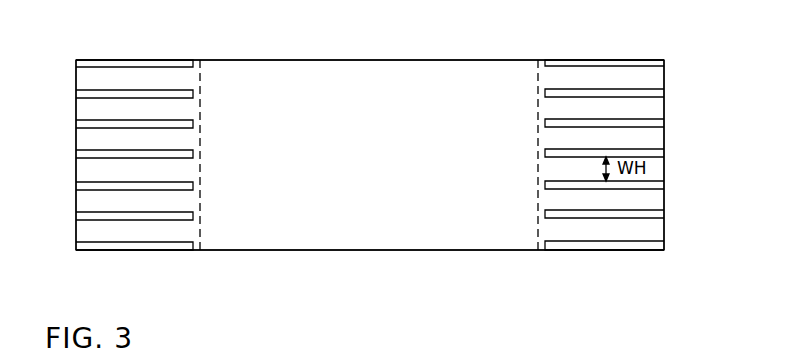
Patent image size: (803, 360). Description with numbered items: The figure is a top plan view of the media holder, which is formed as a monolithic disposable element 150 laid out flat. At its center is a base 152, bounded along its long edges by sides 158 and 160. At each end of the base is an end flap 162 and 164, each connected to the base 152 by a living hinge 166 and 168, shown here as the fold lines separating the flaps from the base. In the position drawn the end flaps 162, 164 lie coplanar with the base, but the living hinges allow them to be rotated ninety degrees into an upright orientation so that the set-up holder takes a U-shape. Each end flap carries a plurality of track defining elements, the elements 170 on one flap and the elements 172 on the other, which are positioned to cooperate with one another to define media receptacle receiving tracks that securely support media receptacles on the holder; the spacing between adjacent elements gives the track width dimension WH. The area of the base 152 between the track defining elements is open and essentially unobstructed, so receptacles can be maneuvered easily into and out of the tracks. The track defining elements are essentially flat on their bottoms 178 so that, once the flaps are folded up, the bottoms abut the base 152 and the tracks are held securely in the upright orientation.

The monolithic disposable element 150 is at (407, 46).
The base 152 is at (385, 183).
The side 158 is at (392, 250).
The side 160 is at (458, 60).
The end flap 162 is at (142, 157).
The end flap 164 is at (634, 161).
The hinge 166 is at (204, 149).
The hinge 168 is at (536, 140).
The track defining elements 170 is at (152, 122).
The track defining elements 172 is at (610, 118).
The bottom 178 is at (193, 186).